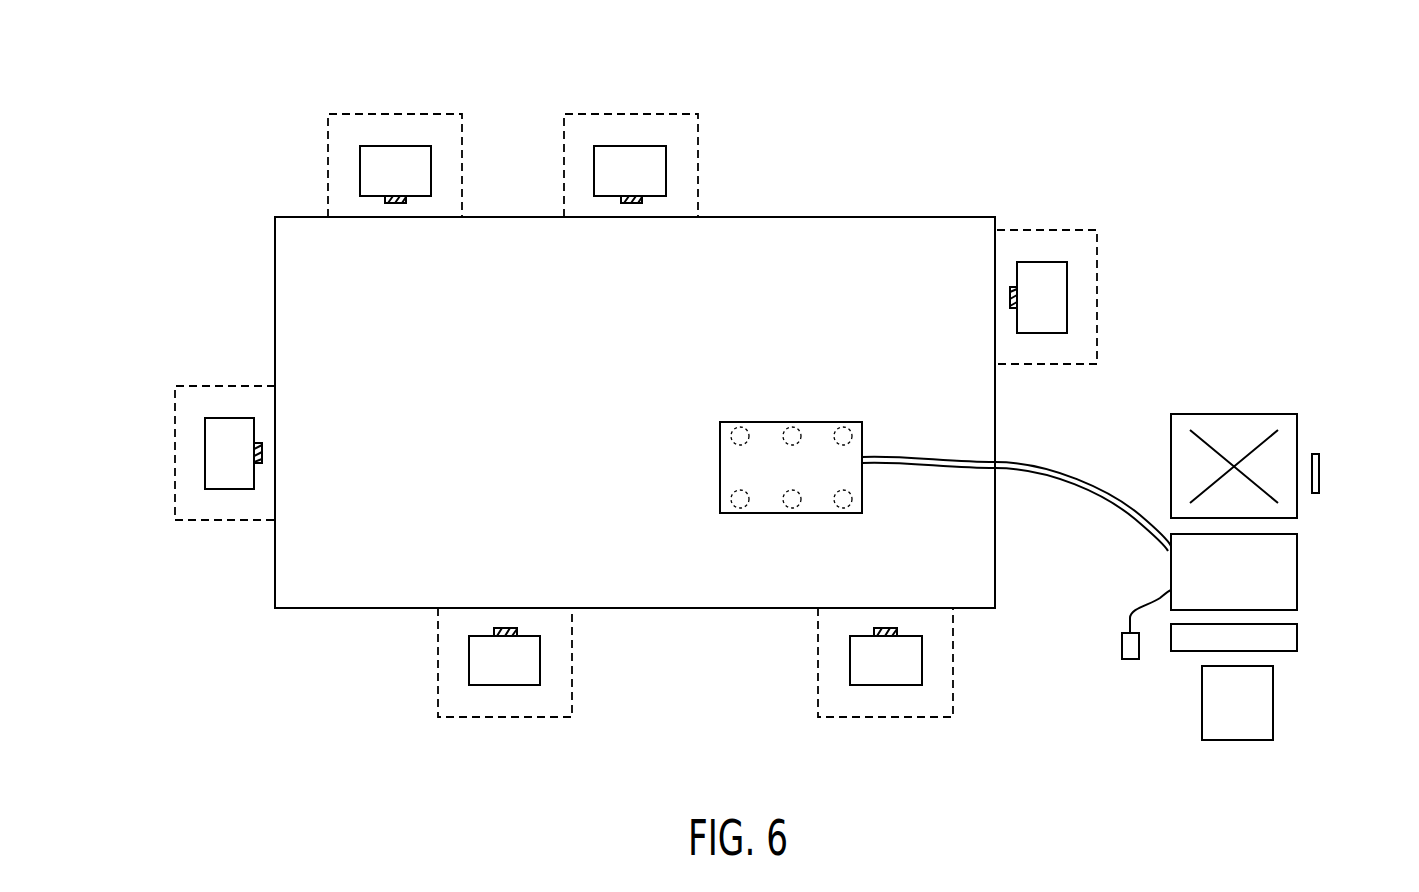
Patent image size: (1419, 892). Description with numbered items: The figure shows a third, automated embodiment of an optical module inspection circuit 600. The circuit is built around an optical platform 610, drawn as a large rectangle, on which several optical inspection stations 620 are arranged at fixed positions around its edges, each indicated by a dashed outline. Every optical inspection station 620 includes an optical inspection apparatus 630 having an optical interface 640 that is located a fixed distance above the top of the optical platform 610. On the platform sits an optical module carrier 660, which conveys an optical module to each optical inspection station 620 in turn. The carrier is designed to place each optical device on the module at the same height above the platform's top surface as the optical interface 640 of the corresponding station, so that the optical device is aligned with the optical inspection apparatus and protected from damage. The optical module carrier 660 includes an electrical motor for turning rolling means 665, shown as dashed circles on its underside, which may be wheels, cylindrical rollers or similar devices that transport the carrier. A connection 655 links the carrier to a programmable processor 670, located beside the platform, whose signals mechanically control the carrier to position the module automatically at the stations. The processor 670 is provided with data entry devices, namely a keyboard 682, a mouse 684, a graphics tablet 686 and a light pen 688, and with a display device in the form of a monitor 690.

The optical module inspection circuit 600 is at (1240, 158).
The optical platform 610 is at (257, 608).
The optical inspection station 620 is at (412, 107).
The optical inspection apparatus 630 is at (358, 138).
The optical interface 640 is at (377, 200).
The cable 655 is at (1087, 472).
The optical module carrier 660 is at (748, 403).
The rolling means 665 is at (803, 428).
The programmable processor 670 is at (1307, 568).
The keyboard 682 is at (1305, 638).
The mouse 684 is at (1115, 645).
The graphics tablet 686 is at (1280, 703).
The light pen 688 is at (1323, 458).
The monitor 690 is at (1248, 405).